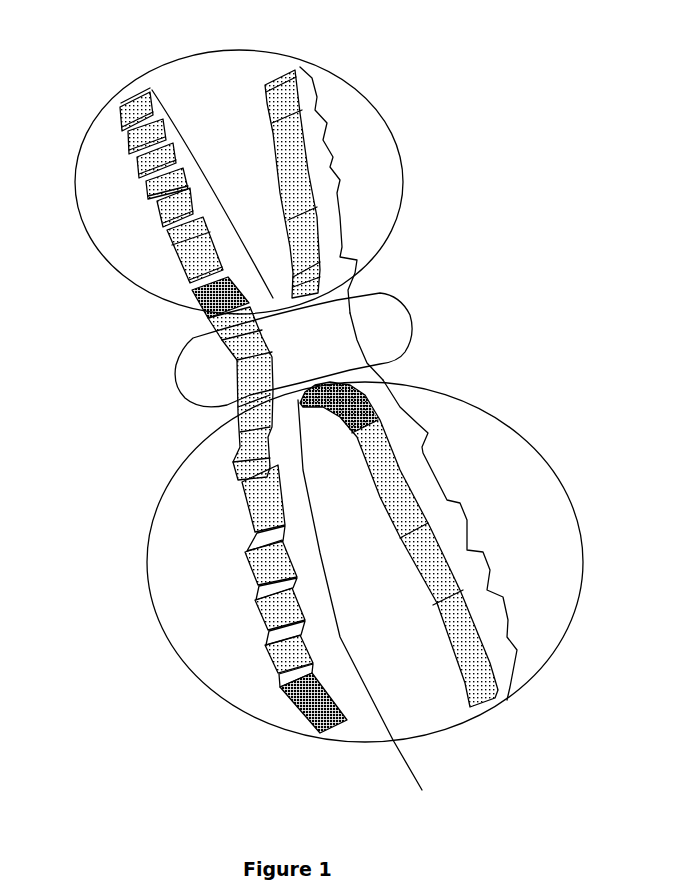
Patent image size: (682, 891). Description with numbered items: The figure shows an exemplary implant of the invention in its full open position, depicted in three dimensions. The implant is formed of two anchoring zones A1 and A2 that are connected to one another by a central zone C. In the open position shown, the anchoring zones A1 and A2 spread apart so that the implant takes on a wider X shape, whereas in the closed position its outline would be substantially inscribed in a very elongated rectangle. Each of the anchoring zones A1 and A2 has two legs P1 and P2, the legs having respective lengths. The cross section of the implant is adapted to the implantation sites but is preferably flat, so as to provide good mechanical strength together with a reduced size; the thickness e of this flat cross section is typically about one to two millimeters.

The anchoring zone A1 is at (388, 601).
The anchoring zone A2 is at (234, 167).
The central zone C is at (414, 332).
The thickness e is at (203, 240).
The leg P1 is at (440, 630).
The leg P2 is at (220, 159).